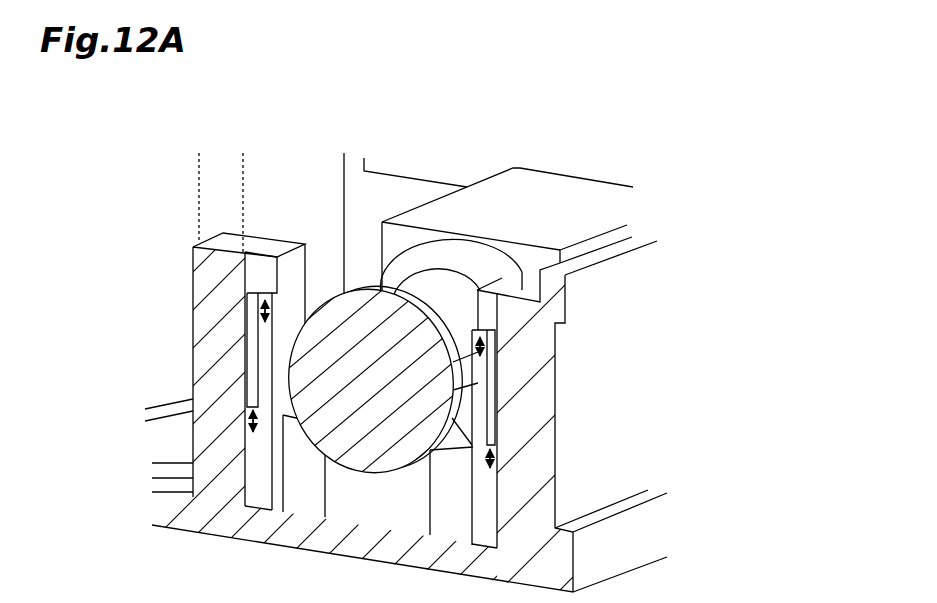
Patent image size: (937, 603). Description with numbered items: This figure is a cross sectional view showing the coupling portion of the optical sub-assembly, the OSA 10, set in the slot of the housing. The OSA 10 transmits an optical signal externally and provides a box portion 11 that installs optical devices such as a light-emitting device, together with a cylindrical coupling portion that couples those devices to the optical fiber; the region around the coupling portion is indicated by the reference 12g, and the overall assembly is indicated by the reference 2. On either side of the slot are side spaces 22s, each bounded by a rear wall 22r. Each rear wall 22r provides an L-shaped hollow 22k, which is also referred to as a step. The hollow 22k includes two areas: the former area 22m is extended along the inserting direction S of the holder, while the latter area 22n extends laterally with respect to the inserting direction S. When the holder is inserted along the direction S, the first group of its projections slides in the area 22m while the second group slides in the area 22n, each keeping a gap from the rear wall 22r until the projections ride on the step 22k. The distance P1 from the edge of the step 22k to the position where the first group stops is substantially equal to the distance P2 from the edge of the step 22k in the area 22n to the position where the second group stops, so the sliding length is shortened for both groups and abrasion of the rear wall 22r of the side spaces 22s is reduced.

The holder 2 is at (218, 162).
The OSA 10 is at (497, 170).
The box portion 11 is at (582, 197).
The guide portion 12g is at (357, 282).
The L-shaped hollow 22k is at (240, 268).
The former area 22m is at (245, 353).
The latter area 22n is at (273, 278).
The rear wall 22r is at (262, 472).
The side space 22s is at (258, 262).
The distance P1 is at (245, 420).
The distance P2 is at (260, 312).
The inserting direction S is at (376, 55).